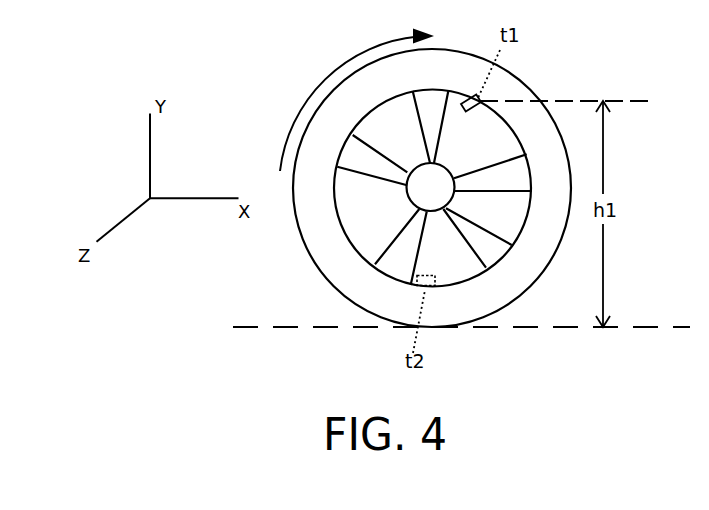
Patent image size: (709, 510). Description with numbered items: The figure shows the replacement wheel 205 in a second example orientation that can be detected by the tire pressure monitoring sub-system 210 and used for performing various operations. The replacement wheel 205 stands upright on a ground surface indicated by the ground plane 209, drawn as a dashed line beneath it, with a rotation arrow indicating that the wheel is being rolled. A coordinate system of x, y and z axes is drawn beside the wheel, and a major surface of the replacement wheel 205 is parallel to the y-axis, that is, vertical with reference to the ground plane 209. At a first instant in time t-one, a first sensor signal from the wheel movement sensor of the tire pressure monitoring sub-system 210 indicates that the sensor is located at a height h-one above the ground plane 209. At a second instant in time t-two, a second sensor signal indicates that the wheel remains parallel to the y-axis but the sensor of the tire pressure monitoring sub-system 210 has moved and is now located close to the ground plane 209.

The replacement wheel 205 is at (278, 258).
The ground plane 209 is at (513, 329).
The tire pressure monitoring sub-system 210 is at (472, 112).